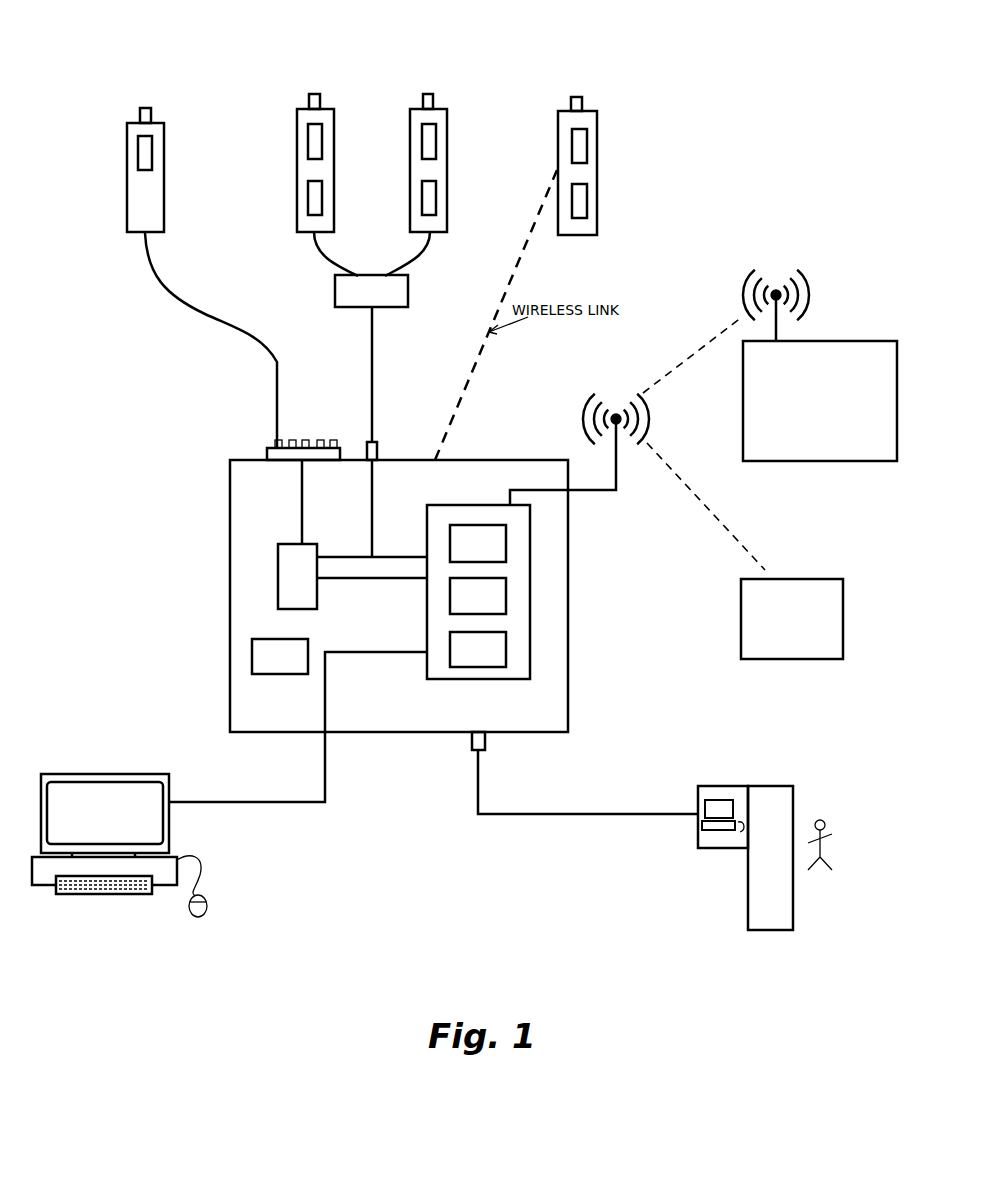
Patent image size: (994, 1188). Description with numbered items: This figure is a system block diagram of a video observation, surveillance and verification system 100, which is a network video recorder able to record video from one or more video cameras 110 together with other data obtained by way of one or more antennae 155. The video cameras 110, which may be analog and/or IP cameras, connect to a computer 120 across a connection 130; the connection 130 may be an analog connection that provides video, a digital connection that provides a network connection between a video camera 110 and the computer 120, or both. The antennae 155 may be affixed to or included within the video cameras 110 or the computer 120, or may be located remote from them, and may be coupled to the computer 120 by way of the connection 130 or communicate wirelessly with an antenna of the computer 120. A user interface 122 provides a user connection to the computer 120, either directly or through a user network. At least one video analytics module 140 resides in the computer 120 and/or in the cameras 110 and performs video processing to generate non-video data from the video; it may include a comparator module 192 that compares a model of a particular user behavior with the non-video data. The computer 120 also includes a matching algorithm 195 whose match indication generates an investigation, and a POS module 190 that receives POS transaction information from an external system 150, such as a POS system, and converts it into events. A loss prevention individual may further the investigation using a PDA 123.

The video observation, surveillance and verification system 100 is at (680, 220).
The video camera 110 is at (152, 116).
The computer 120 is at (507, 460).
The user interface 122 is at (88, 774).
The PDA 123 is at (823, 461).
The connection 130 is at (278, 357).
The video analytics module 140 is at (313, 200).
The external system 150 is at (722, 786).
The antenna 155 is at (142, 155).
The POS module 190 is at (506, 652).
The comparator module 192 is at (506, 597).
The matching algorithm 195 is at (506, 545).